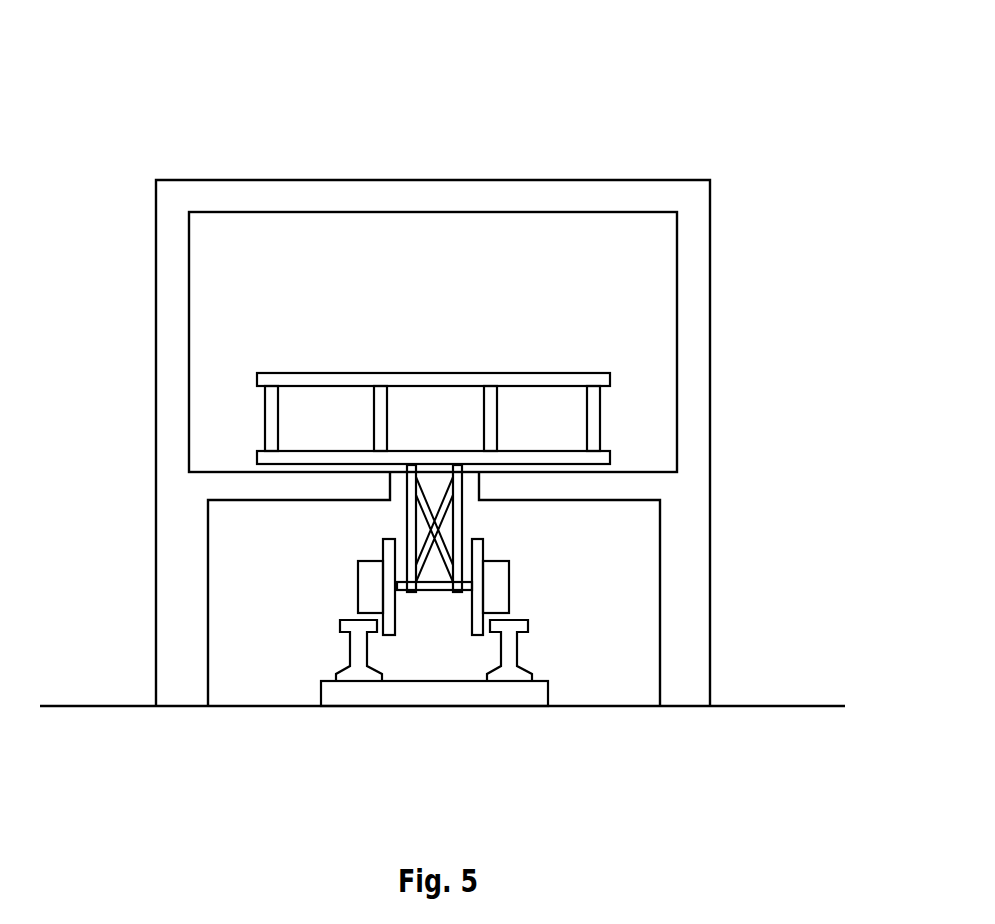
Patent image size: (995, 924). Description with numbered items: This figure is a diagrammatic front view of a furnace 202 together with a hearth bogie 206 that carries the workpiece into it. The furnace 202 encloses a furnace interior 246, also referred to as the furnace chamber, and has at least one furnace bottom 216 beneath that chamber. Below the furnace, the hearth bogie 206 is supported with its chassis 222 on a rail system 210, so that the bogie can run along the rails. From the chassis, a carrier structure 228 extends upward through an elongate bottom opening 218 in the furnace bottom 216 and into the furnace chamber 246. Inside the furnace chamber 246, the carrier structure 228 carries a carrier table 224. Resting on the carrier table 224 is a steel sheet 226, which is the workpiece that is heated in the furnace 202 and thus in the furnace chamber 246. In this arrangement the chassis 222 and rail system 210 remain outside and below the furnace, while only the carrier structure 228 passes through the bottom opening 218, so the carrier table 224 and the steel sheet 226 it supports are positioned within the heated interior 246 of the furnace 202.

The furnace 202 is at (663, 125).
The hearth bogie 206 is at (342, 525).
The rail system 210 is at (513, 645).
The furnace bottom 216 is at (560, 490).
The elongate bottom opening 218 is at (463, 507).
The chassis 222 is at (343, 585).
The carrier table 224 is at (490, 422).
The steel sheet 226 is at (540, 370).
The carrier structure 228 is at (445, 555).
The furnace interior 246 is at (508, 275).